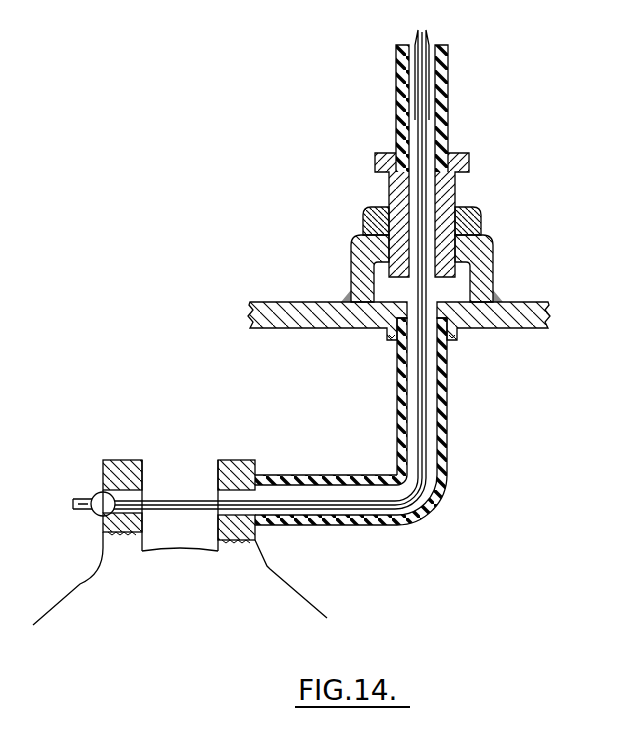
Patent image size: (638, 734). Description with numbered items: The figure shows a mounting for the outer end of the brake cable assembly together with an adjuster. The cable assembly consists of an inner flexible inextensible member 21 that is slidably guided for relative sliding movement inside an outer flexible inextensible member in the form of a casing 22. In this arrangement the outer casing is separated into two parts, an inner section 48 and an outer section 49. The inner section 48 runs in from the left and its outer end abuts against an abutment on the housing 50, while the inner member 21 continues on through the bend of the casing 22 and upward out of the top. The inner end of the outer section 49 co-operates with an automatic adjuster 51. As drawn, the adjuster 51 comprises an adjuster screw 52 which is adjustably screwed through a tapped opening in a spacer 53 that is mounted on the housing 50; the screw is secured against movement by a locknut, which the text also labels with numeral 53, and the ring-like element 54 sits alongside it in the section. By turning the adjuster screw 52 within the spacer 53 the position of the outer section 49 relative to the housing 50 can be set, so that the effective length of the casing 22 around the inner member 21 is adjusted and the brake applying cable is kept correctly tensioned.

The inner flexible inextensible member 21 is at (424, 72).
The casing 22 is at (447, 500).
The inner section 48 is at (329, 482).
The outer section 49 is at (403, 68).
The housing 50 is at (298, 312).
The automatic adjuster 51 is at (479, 221).
The adjuster screw 52 is at (469, 163).
The spacer 53 is at (491, 266).
The packing ring 54 is at (366, 216).